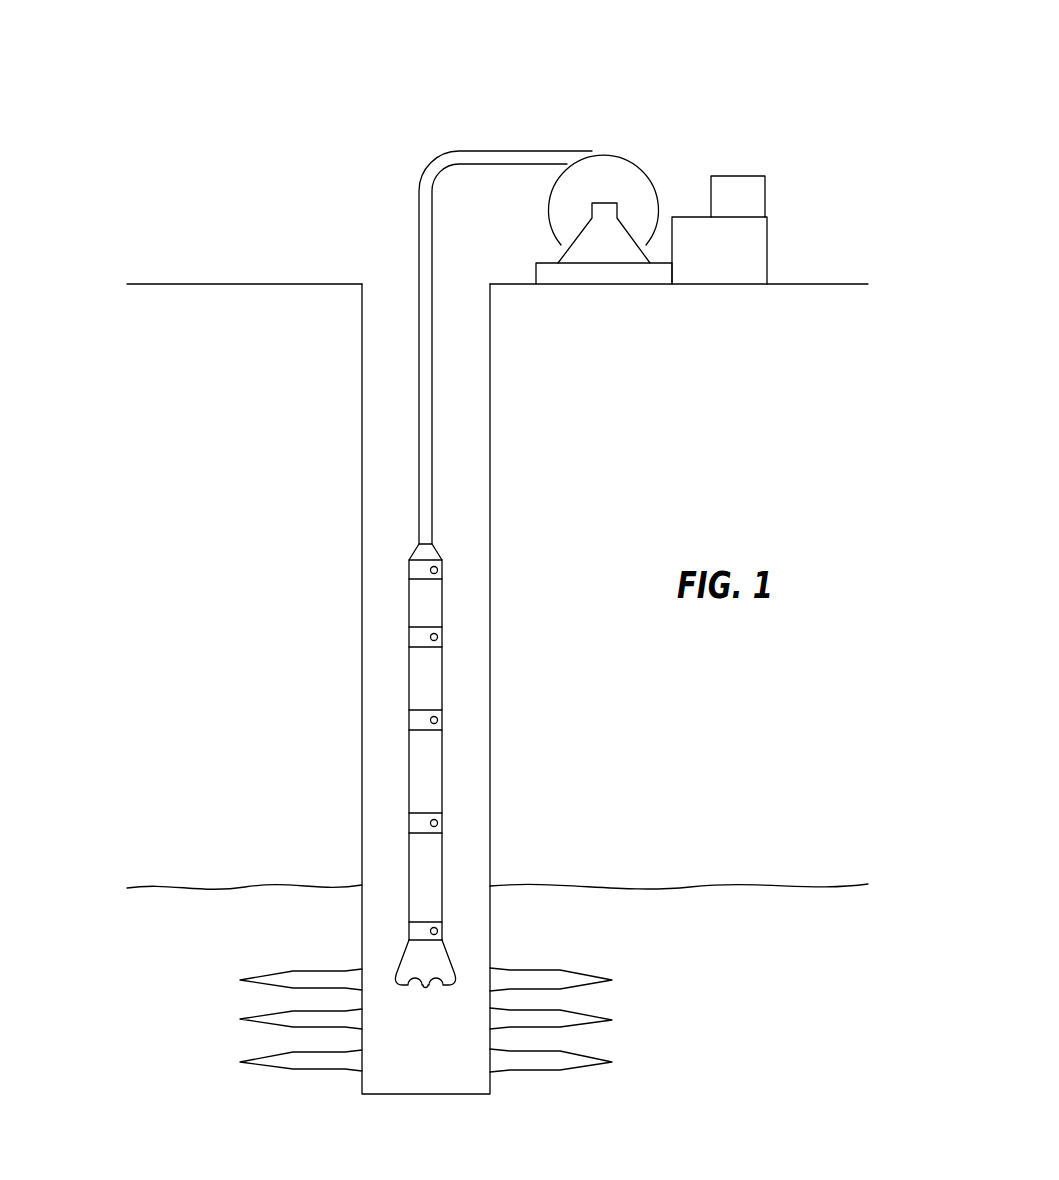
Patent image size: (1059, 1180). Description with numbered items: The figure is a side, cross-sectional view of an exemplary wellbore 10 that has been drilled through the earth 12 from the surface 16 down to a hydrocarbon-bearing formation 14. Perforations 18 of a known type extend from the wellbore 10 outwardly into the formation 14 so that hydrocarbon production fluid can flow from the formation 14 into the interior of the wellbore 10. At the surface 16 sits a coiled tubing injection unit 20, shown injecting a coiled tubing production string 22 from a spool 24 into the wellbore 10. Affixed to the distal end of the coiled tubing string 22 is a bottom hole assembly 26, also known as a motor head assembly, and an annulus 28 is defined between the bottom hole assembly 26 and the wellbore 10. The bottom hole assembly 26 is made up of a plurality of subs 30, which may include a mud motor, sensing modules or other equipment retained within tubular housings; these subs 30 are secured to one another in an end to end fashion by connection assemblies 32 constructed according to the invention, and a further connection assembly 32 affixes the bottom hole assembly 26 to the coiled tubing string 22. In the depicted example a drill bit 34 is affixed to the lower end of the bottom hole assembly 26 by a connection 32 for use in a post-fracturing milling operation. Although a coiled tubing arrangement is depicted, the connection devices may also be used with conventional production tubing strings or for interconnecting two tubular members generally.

The wellbore 10 is at (492, 689).
The earth 12 is at (158, 446).
The hydrocarbon-bearing formation 14 is at (827, 1087).
The surface 16 is at (470, 225).
The perforations 18 is at (127, 1016).
The coiled tubing injection unit 20 is at (760, 176).
The coiled tubing production string 22 is at (367, 333).
The spool 24 is at (640, 155).
The bottom hole assembly 26 is at (516, 750).
The annulus 28 is at (308, 726).
The subs 30 is at (308, 702).
The connection assembly 32 is at (308, 699).
The drill bit 34 is at (509, 908).